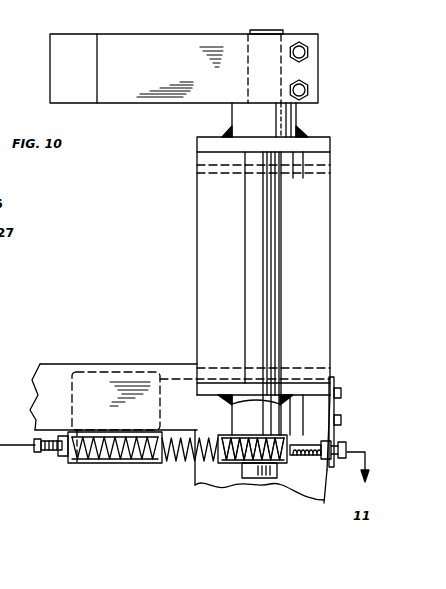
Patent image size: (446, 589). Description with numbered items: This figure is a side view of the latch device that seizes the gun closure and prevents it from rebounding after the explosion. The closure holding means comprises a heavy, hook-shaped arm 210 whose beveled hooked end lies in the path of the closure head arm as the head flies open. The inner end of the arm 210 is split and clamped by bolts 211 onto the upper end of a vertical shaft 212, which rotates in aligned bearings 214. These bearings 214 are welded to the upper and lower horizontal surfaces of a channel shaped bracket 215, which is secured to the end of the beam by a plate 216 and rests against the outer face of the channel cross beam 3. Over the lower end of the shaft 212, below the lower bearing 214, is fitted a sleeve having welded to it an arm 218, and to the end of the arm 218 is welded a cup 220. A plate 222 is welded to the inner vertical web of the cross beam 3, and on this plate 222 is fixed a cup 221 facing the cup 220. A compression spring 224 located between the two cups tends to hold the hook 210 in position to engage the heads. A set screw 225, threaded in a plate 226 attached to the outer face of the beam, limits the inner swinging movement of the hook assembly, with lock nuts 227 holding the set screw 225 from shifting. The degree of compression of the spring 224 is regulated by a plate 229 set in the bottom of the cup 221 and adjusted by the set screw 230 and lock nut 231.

The channel cross beam 3 is at (67, 370).
The hook-shaped arm 210 is at (175, 100).
The bolts 211 is at (306, 50).
The vertical shaft 212 is at (271, 272).
The bearings 214 is at (298, 120).
The channel shaped bracket 215 is at (205, 246).
The plate 216 is at (197, 170).
The arm 218 is at (250, 435).
The cup 220 is at (225, 464).
The cup 221 is at (105, 463).
The plate 222 is at (148, 372).
The compression spring 224 is at (172, 465).
The set screw 225 is at (293, 456).
The plate 226 is at (333, 378).
The lock nuts 227 is at (337, 447).
The plate 229 is at (77, 464).
The set screw 230 is at (38, 452).
The lock nut 231 is at (63, 458).